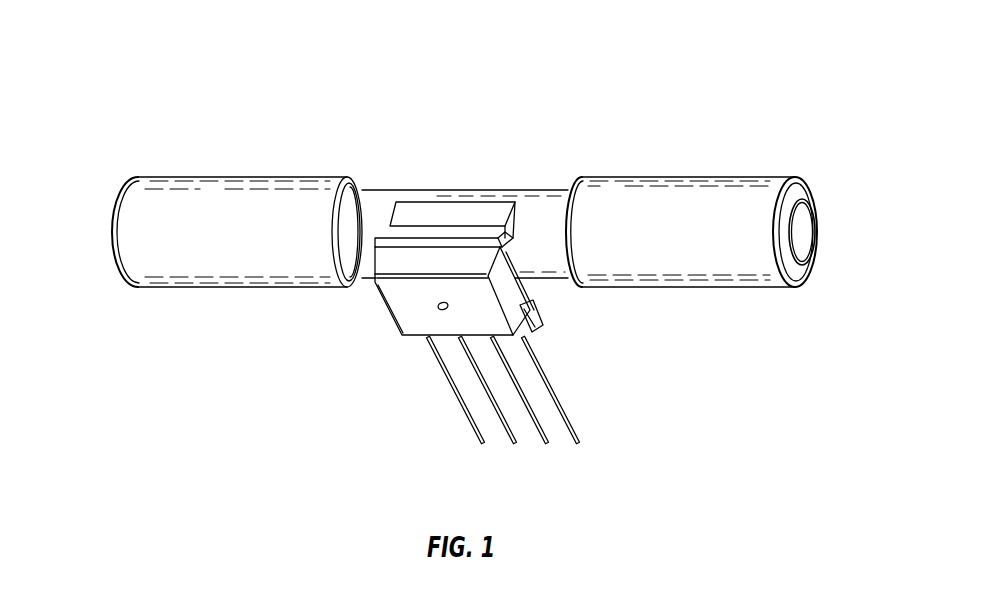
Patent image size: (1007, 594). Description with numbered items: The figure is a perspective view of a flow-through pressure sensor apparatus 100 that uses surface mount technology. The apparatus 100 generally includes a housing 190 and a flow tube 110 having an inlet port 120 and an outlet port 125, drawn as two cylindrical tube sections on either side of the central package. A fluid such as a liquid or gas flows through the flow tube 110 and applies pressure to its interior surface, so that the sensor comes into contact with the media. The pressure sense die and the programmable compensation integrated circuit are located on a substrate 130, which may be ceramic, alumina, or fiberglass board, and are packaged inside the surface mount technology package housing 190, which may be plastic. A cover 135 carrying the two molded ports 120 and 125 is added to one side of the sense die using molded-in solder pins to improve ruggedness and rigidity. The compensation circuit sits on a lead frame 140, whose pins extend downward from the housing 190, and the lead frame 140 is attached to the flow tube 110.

The flow-through pressure sensor apparatus 100 is at (164, 69).
The flow tube 110 is at (690, 177).
The inlet port 120 is at (110, 235).
The outlet port 125 is at (803, 233).
The substrate 130 is at (537, 308).
The cover 135 is at (410, 329).
The lead frame 140 is at (563, 405).
The housing 190 is at (367, 308).